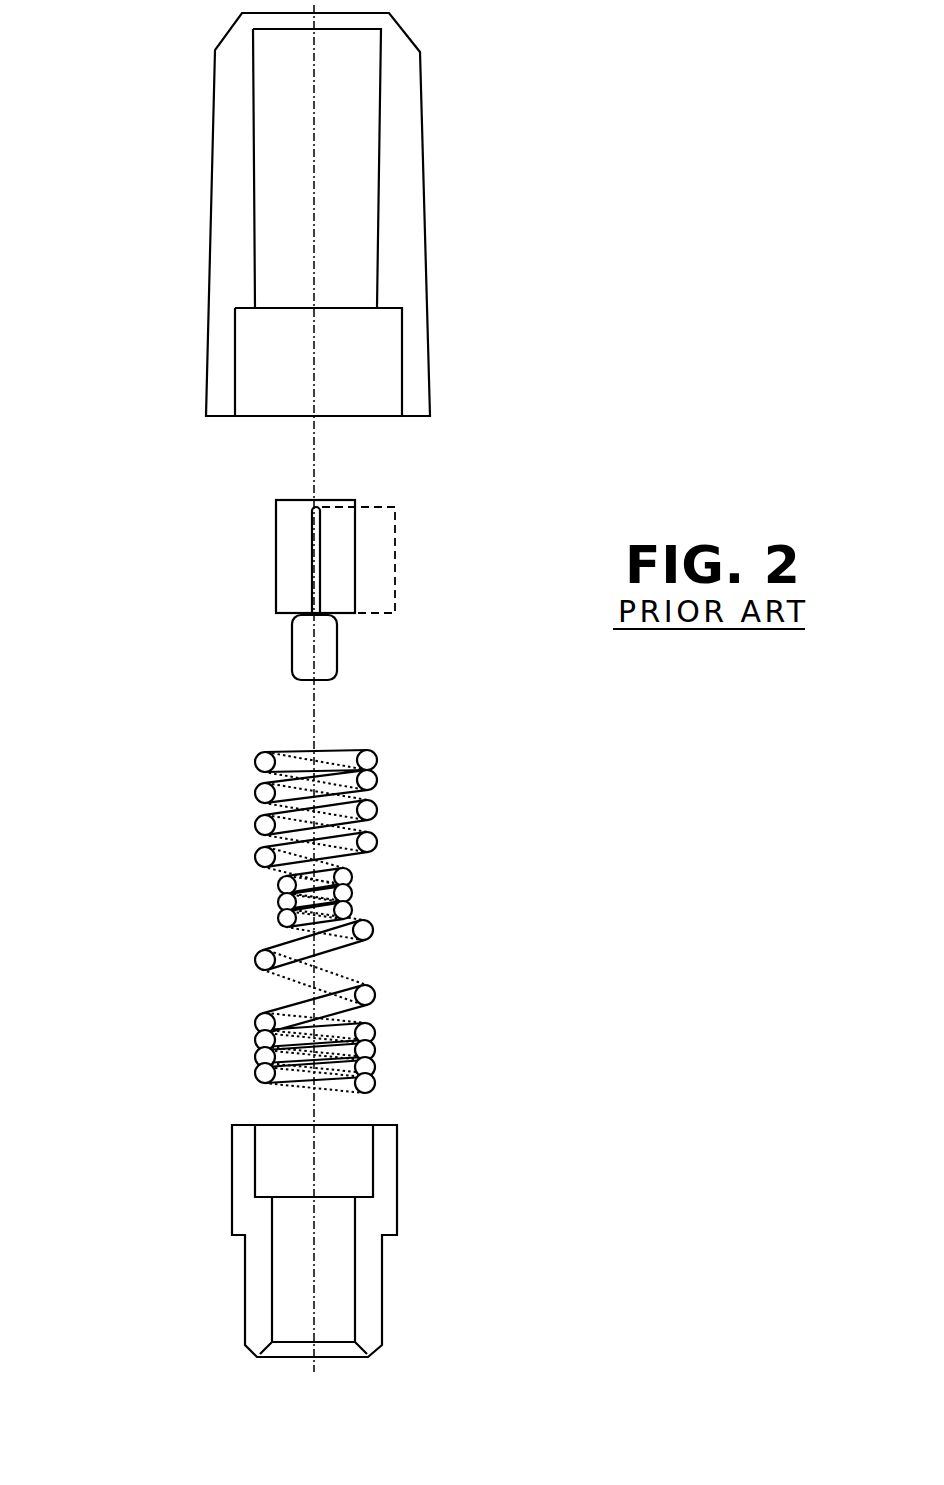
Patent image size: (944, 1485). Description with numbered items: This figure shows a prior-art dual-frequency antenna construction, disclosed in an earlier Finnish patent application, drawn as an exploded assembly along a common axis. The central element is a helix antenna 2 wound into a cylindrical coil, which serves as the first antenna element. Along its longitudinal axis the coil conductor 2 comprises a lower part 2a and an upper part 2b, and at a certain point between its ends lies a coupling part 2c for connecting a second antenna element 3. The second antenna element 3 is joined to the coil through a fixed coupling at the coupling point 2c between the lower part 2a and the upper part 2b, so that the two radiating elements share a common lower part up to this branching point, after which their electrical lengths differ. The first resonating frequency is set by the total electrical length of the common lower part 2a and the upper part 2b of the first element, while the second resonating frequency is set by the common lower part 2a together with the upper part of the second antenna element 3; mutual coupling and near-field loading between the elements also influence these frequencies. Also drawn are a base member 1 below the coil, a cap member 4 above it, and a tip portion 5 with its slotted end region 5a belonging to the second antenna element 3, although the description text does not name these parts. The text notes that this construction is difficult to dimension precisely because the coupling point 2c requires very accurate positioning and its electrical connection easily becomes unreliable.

The housing base 1 is at (164, 1216).
The helix antenna 2 is at (253, 919).
The lower part 2a is at (378, 932).
The upper part 2b is at (378, 745).
The coupling part 2c is at (378, 868).
The second antenna element 3 is at (246, 624).
The cap / socket 4 is at (168, 200).
The contact tip 5 is at (328, 655).
The slotted tip portion 5a is at (395, 563).